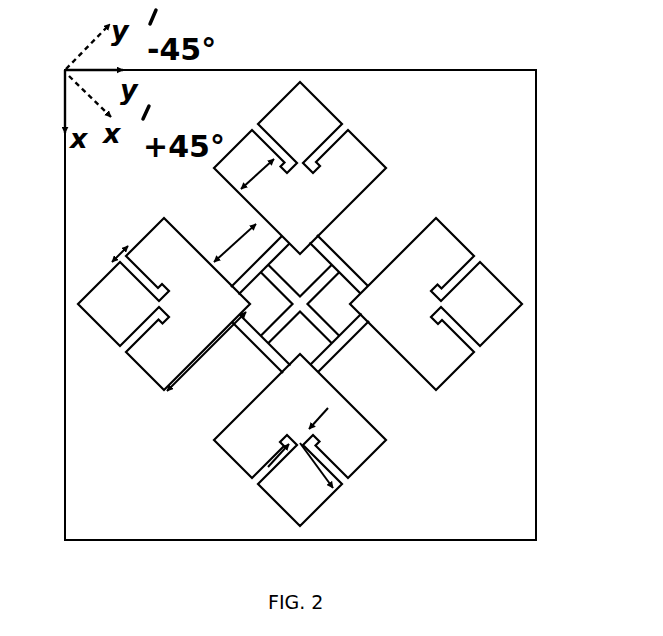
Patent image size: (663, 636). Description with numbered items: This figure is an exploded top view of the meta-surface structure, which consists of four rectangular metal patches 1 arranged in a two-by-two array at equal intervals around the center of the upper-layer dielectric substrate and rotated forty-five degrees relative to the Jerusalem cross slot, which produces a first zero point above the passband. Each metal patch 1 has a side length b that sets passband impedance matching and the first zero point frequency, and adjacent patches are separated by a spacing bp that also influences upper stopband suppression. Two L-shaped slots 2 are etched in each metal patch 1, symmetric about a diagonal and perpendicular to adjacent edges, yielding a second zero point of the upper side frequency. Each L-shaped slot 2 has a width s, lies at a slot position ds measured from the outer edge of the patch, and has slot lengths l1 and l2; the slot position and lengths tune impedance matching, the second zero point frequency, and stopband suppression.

The metal patch 1 is at (439, 242).
The L-shaped slot 2 is at (318, 463).
The slot position ds is at (248, 163).
The spacing between adjacent metal patches bp is at (226, 237).
The width of L-shaped slot s is at (113, 248).
The side length of metal patch b is at (207, 351).
The slot length l1 is at (300, 470).
The slot length l2 is at (308, 414).